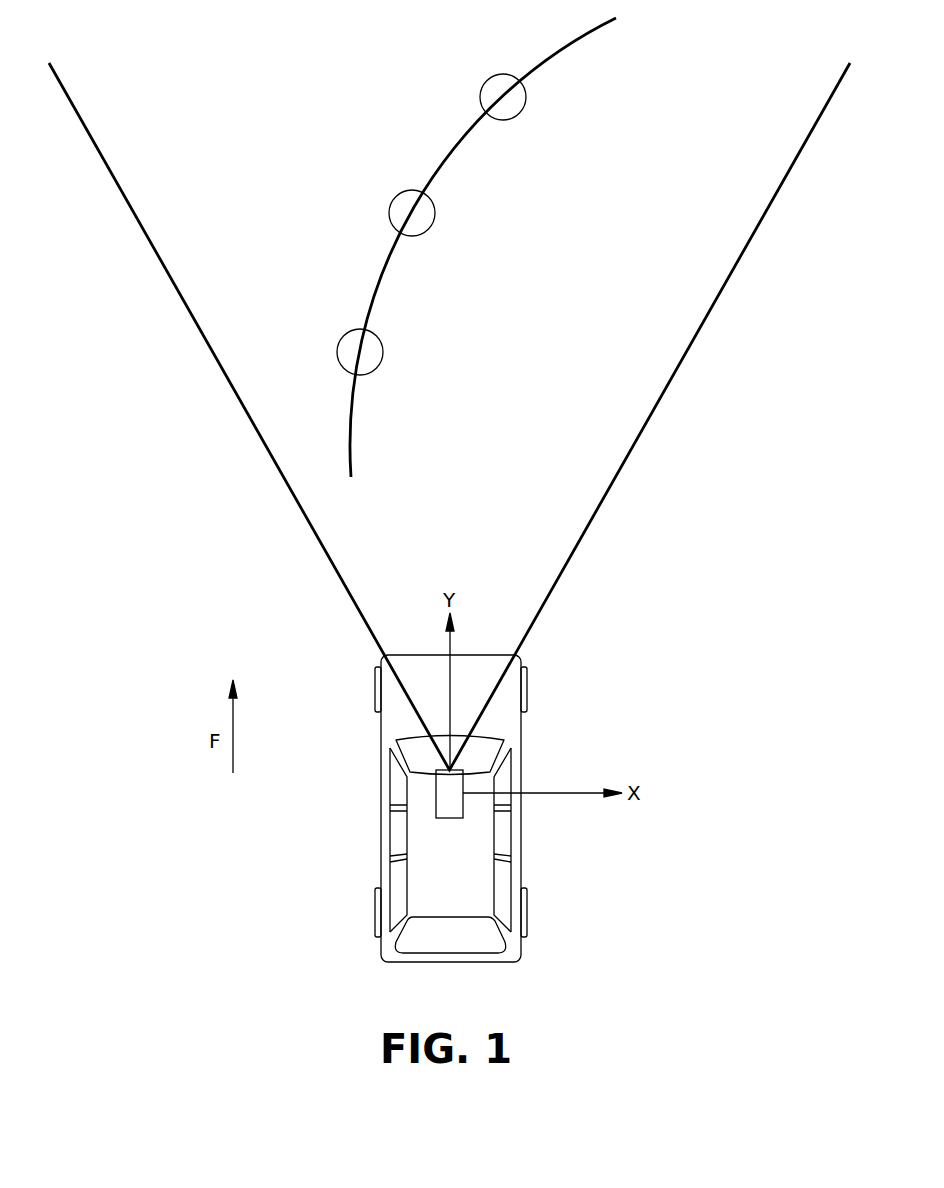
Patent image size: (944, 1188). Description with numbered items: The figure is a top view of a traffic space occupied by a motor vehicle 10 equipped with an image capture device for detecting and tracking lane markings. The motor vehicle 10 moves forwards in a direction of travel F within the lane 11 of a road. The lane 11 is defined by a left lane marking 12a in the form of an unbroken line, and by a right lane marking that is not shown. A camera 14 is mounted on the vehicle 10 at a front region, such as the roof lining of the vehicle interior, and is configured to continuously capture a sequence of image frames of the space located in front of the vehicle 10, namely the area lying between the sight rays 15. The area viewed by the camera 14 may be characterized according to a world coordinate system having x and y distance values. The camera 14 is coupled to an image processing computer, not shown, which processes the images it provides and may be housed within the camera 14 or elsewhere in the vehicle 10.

The motor vehicle 10 is at (433, 885).
The lane 11 is at (539, 247).
The left lane marking 12a is at (450, 155).
The camera 14 is at (444, 790).
The sight rays 15 is at (228, 380).